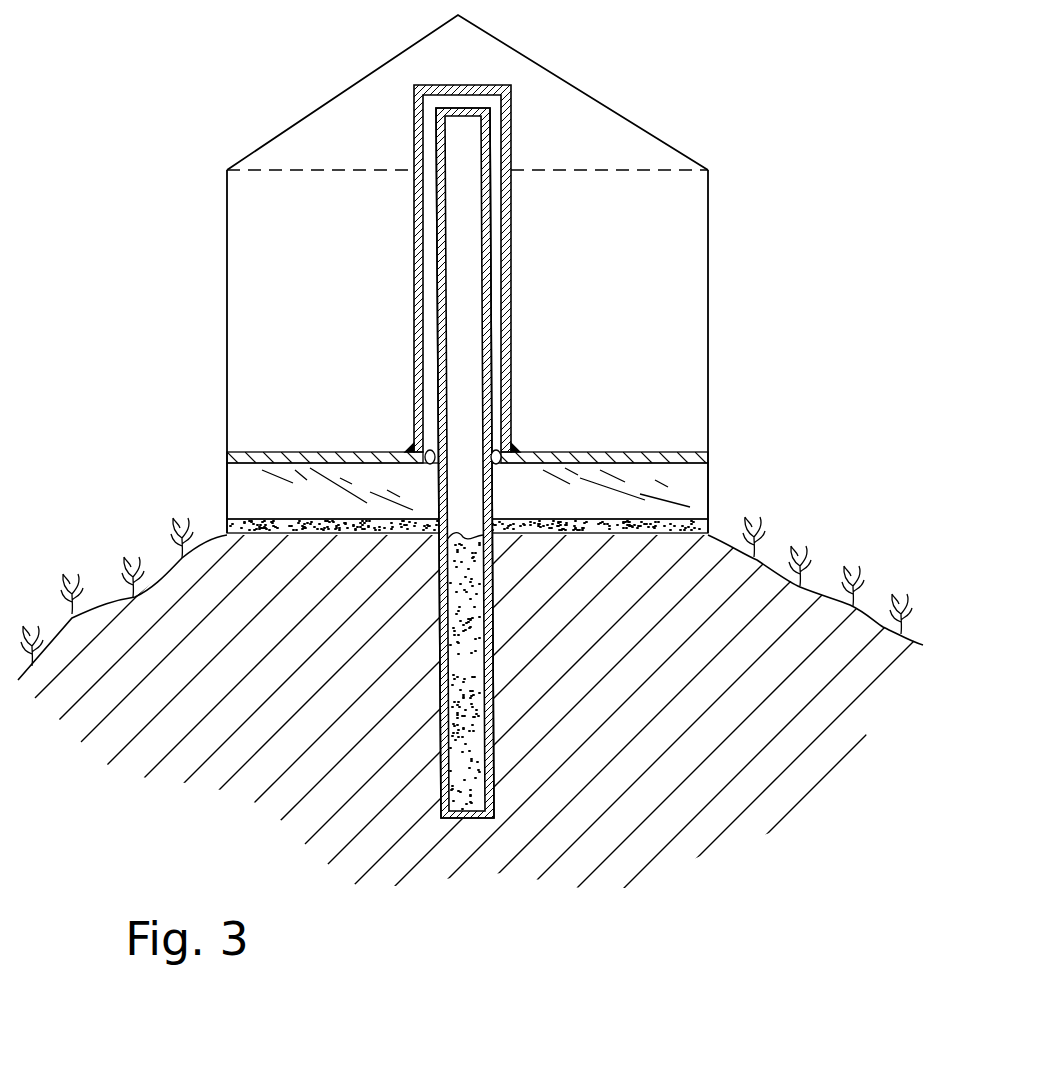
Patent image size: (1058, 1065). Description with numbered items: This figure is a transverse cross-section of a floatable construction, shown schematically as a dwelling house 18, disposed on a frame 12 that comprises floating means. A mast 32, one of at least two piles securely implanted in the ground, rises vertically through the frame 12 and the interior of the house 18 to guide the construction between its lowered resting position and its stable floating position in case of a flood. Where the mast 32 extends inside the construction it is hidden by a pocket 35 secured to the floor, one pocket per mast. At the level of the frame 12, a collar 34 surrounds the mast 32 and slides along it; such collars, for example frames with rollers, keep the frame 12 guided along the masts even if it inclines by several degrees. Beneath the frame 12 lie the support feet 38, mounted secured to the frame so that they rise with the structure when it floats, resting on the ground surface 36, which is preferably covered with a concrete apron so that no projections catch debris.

The dwelling house 18 is at (627, 115).
The frame 12 is at (678, 440).
The mast 32 is at (490, 221).
The pocket 35 is at (511, 286).
The collar 34 is at (510, 444).
The support feet 38 is at (695, 505).
The ground surface 36 is at (626, 535).